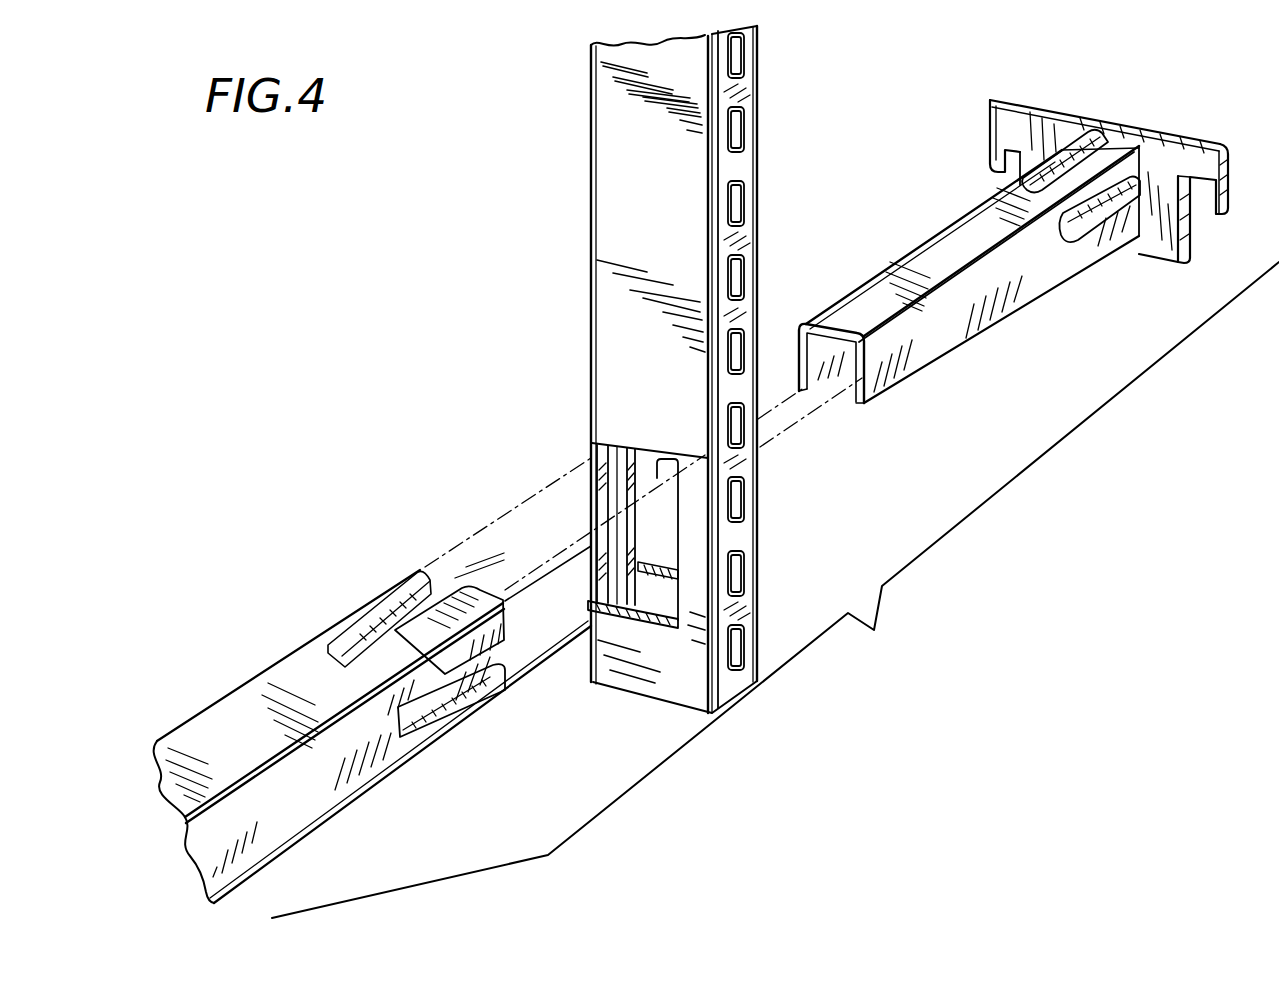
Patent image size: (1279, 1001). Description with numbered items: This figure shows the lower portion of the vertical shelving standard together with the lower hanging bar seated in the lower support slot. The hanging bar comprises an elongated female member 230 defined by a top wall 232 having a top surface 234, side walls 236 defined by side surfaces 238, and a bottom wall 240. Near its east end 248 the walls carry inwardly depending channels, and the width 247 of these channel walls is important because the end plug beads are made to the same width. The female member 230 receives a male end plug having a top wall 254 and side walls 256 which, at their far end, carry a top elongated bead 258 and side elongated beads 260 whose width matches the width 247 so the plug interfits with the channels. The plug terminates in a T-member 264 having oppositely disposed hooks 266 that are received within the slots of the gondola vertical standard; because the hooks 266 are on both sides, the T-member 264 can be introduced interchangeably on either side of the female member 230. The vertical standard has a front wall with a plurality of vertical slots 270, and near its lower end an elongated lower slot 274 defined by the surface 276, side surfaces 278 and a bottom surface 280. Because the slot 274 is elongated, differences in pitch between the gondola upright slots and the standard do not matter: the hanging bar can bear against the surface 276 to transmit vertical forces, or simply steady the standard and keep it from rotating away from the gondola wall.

The elongated female member 230 is at (366, 725).
The top wall 232 is at (290, 688).
The top surface 234 is at (232, 752).
The side walls 236 is at (368, 777).
The side surfaces 238 is at (305, 831).
The bottom wall 240 is at (498, 658).
The width of the wall 247 is at (485, 588).
The east end 248 is at (342, 622).
The top wall of male end plug 254 is at (920, 252).
The side walls of male end plug 256 is at (802, 350).
The top elongated bead 258 is at (1030, 172).
The side elongated bead 260 is at (1072, 240).
The T-member 264 is at (1157, 147).
The hooks 266 is at (990, 138).
The vertical slots 270 is at (745, 121).
The lower elongated slot 274 is at (668, 570).
The slot surface 276 is at (662, 462).
The side surfaces 278 is at (620, 470).
The bottom surface 280 is at (398, 578).